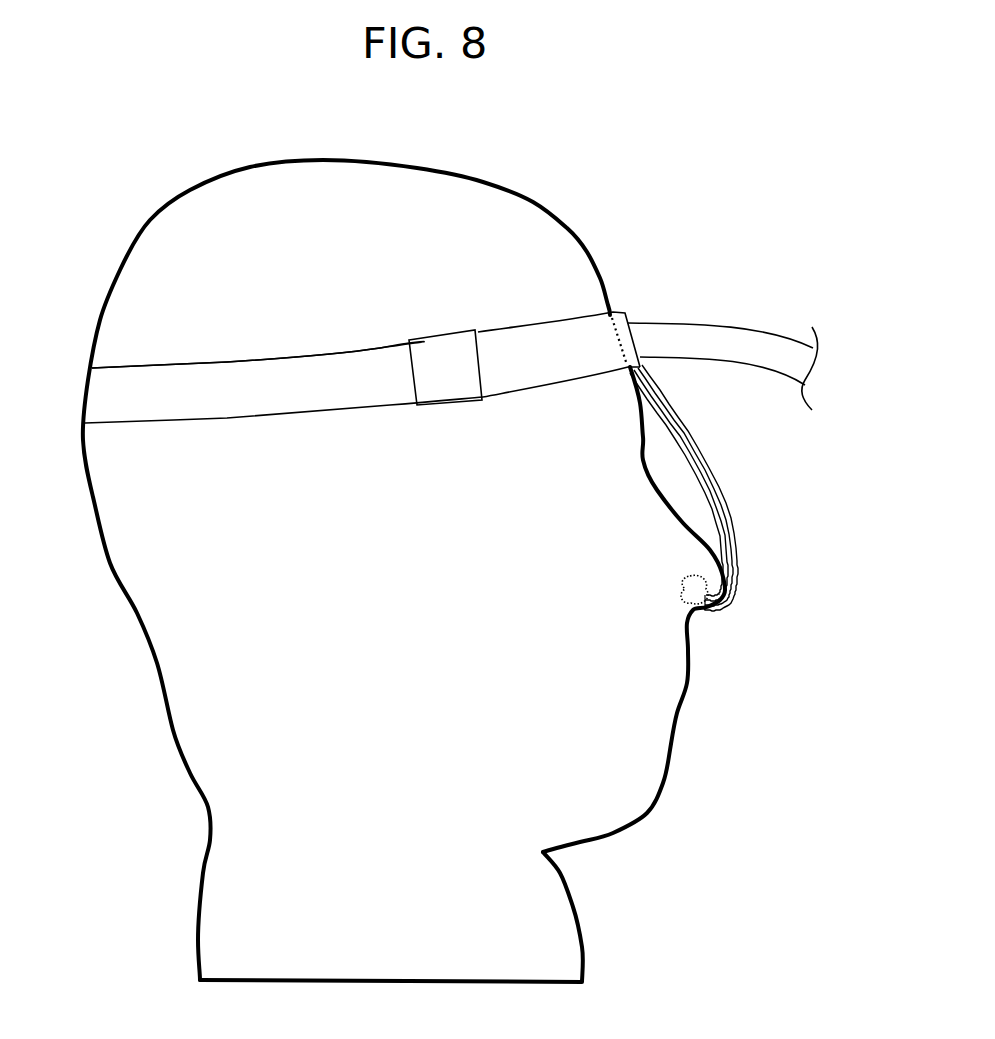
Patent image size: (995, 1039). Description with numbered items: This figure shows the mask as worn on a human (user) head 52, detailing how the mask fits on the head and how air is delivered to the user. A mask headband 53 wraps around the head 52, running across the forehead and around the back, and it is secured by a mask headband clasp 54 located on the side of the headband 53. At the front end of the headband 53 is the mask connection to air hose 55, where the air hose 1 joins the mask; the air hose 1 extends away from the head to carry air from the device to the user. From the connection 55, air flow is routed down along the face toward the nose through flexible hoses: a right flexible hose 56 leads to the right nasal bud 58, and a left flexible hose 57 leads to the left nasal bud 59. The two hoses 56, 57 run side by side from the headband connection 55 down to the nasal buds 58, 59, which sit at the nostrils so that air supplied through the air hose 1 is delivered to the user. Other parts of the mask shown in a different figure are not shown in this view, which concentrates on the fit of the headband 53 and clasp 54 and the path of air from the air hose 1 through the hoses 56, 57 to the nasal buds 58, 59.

The human head 52 is at (565, 220).
The mask headband 53 is at (337, 364).
The mask headband clasp 54 is at (447, 347).
The mask connection to air hose 55 is at (623, 322).
The air hose 1 is at (655, 342).
The right flexible hose 56 is at (677, 415).
The left flexible hose 57 is at (685, 432).
The right nasal bud 58 is at (700, 580).
The left nasal bud 59 is at (730, 587).